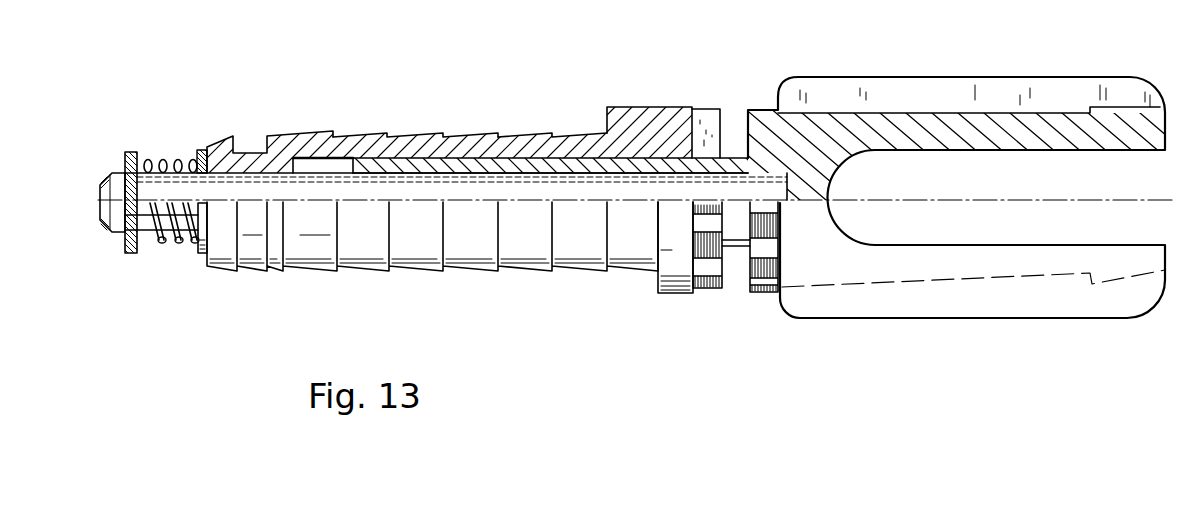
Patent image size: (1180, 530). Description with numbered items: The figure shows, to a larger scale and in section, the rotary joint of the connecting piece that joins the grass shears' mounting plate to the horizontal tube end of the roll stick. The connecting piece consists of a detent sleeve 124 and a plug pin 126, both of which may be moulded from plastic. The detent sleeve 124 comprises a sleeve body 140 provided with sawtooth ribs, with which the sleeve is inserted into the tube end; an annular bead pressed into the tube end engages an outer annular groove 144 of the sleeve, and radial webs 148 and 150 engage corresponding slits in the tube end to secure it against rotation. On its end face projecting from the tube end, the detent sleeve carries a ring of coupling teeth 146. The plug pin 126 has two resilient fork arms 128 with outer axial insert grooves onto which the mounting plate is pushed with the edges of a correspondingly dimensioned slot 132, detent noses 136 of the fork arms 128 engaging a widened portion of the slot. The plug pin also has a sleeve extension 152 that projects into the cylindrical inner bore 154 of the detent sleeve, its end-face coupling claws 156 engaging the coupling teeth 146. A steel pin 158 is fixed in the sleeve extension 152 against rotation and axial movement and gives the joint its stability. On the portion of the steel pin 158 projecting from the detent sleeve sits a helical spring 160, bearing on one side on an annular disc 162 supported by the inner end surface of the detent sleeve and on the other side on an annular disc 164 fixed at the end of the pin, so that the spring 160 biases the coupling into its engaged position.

The detent sleeve 124 is at (540, 152).
The plug pin 126 is at (832, 117).
The fork arms 128 is at (961, 118).
The slot 132 is at (1027, 233).
The detent noses 136 is at (1094, 112).
The sleeve body 140 is at (433, 136).
The outer annular groove 144 is at (254, 152).
The coupling teeth 146 is at (706, 268).
The radial web 148 is at (640, 118).
The radial web 150 is at (658, 283).
The sleeve extension 152 is at (740, 165).
The cylindrical inner bore 154 is at (324, 170).
The coupling claws 156 is at (763, 262).
The steel pin 158 is at (113, 236).
The helical spring 160 is at (186, 160).
The annular disc 162 is at (203, 254).
The annular disc 164 is at (133, 151).